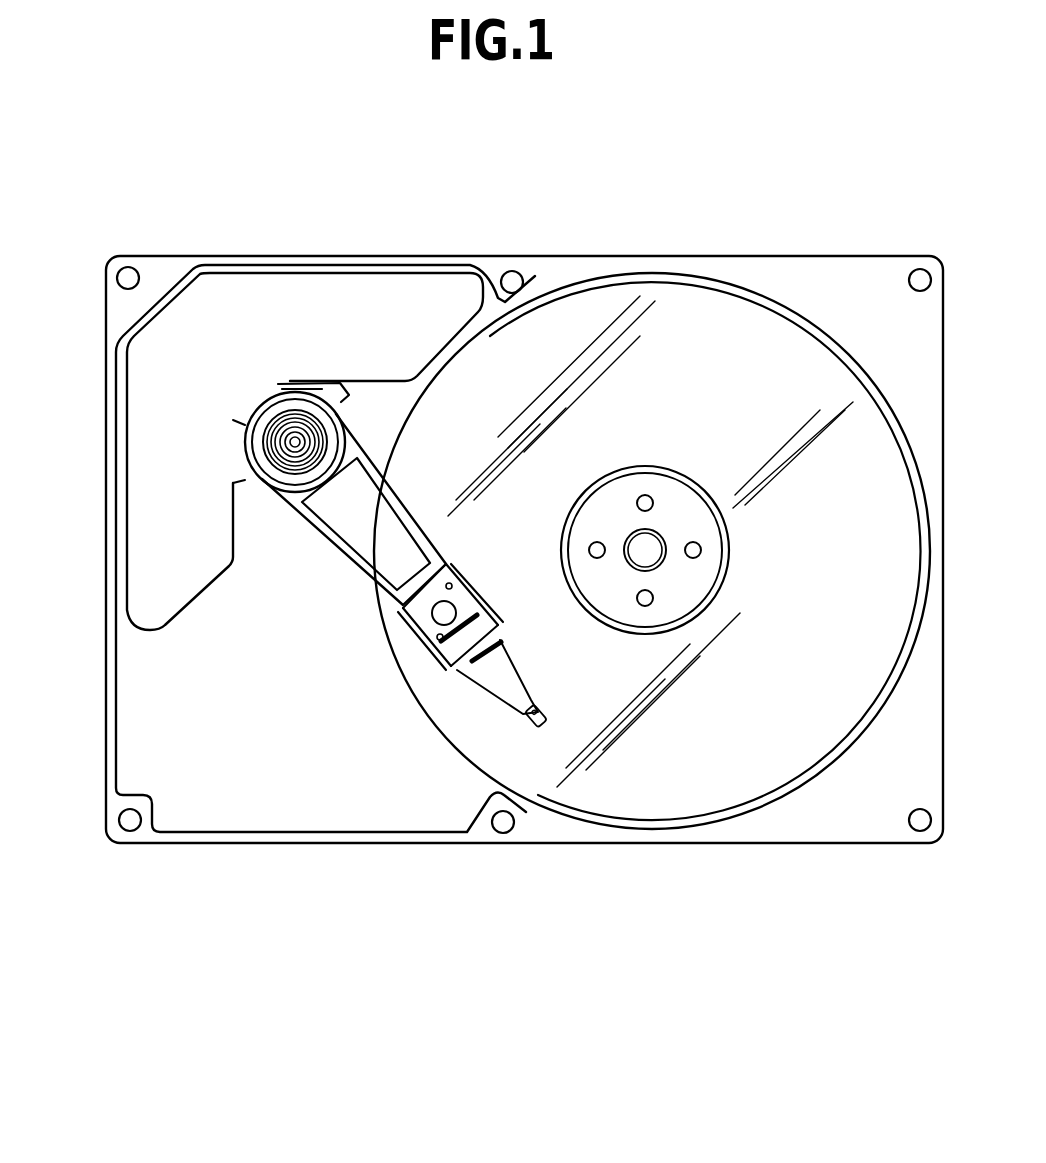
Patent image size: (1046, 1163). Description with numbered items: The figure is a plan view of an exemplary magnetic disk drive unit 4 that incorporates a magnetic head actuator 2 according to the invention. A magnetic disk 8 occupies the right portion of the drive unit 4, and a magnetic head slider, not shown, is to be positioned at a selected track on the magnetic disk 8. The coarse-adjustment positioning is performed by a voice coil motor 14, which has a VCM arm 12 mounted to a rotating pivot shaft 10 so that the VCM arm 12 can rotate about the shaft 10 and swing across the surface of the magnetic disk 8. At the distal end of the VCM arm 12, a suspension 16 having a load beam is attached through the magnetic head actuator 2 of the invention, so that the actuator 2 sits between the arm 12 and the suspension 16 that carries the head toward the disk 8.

The magnetic head actuator 2 is at (457, 652).
The magnetic disk drive unit 4 is at (687, 858).
The magnetic disk 8 is at (778, 383).
The pivot shaft 10 is at (295, 442).
The VCM arm 12 is at (353, 565).
The voice coil motor 14 is at (265, 295).
The suspension 16 is at (498, 680).